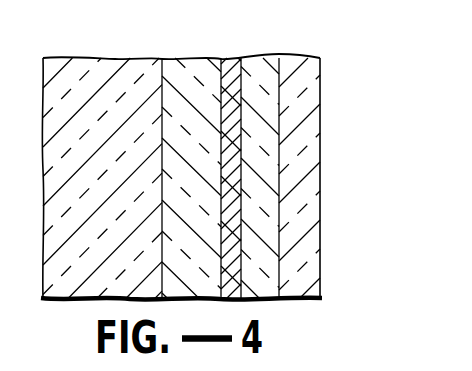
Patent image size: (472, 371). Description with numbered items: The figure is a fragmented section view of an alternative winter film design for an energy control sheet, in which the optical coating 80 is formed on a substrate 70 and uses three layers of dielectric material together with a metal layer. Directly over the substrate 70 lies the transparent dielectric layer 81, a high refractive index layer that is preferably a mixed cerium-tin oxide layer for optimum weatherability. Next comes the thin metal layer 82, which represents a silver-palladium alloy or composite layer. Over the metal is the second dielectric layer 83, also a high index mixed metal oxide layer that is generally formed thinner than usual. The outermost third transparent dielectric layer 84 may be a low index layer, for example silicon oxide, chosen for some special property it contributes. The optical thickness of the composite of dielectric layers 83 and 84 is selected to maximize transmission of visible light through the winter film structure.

The substrate 70 is at (113, 59).
The optical coating 80 is at (198, 58).
The transparent dielectric layer 81 is at (171, 59).
The thin metal layer 82 is at (232, 60).
The second dielectric layer 83 is at (272, 59).
The third transparent dielectric layer 84 is at (316, 69).